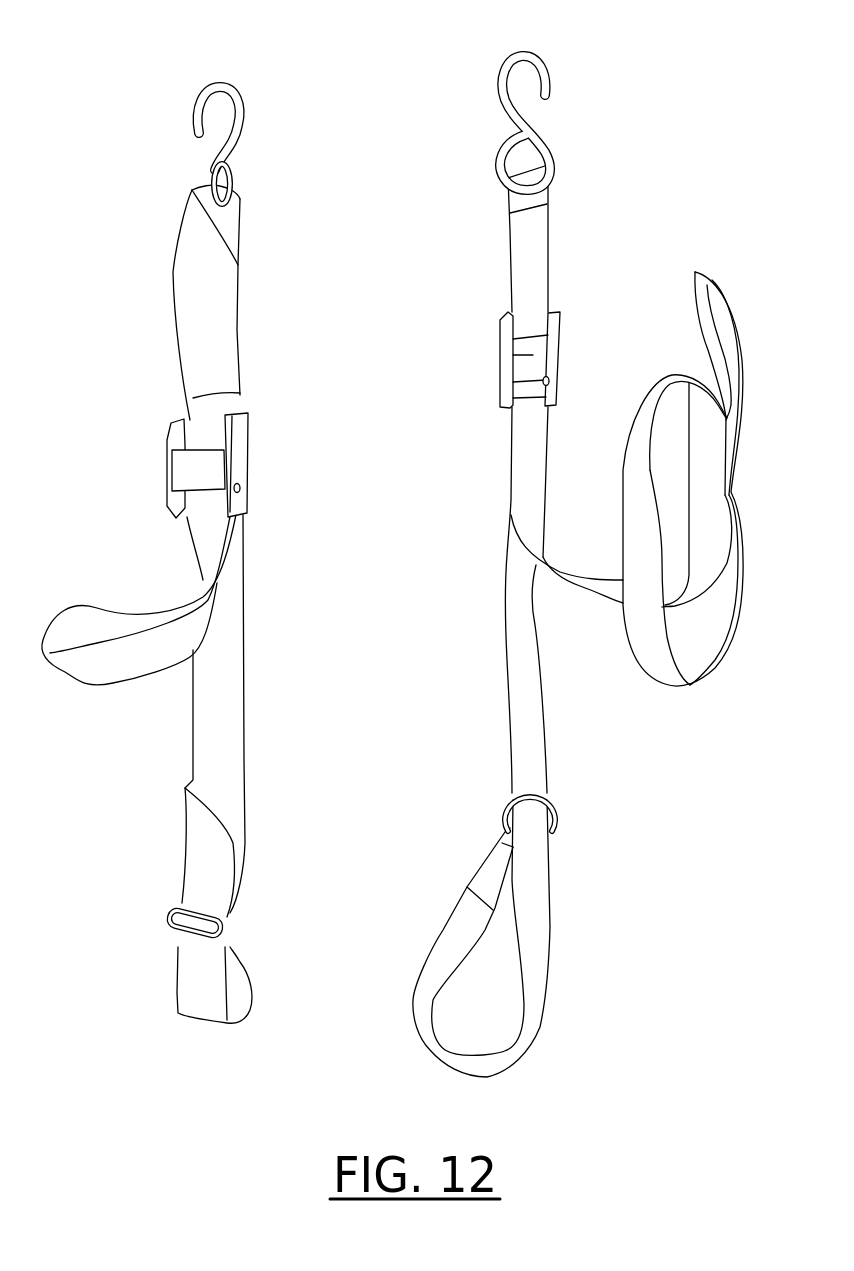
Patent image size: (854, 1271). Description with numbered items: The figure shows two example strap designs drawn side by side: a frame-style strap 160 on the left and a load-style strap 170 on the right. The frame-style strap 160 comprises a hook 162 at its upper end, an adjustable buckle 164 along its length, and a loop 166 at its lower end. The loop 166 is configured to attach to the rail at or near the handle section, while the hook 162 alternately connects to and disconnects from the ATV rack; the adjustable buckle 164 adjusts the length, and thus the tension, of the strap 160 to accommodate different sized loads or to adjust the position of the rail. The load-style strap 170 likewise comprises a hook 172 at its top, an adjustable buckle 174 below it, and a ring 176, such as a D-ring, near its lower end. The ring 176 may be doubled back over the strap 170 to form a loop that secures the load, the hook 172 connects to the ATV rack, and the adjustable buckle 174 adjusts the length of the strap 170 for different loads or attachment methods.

The frame-style strap 160 is at (240, 357).
The hook 162 is at (198, 133).
The adjustable buckle 164 is at (168, 473).
The loop 166 is at (172, 990).
The load-style strap 170 is at (550, 257).
The hook 172 is at (555, 74).
The adjustable buckle 174 is at (502, 363).
The ring 176 is at (562, 818).